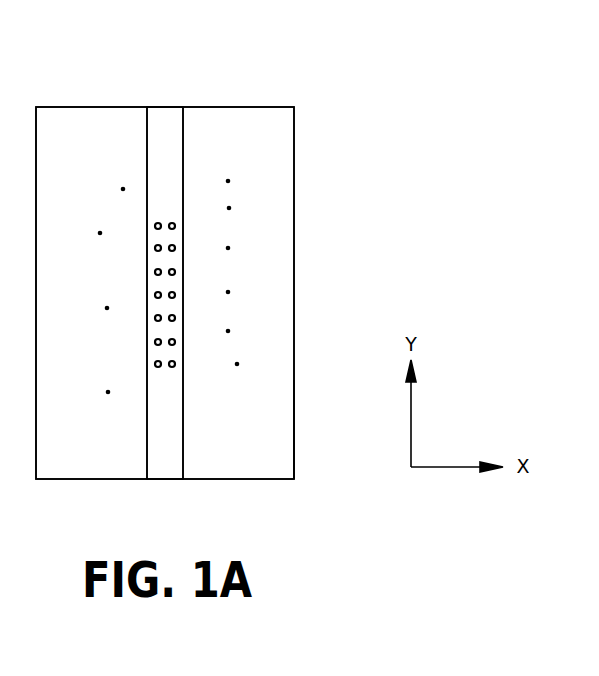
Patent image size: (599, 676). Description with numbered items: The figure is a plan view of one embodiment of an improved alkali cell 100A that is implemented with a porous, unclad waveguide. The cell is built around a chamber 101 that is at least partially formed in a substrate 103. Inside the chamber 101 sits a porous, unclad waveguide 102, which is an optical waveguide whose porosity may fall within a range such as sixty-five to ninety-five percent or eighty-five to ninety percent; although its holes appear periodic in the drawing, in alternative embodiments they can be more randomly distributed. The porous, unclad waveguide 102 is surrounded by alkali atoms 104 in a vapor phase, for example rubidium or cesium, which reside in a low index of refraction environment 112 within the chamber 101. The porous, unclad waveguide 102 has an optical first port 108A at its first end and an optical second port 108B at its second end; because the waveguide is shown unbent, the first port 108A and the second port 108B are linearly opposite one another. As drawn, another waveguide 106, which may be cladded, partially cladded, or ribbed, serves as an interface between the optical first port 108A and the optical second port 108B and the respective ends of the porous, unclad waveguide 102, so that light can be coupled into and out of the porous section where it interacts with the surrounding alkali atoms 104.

The improved alkali cell 100A is at (143, 25).
The chamber 101 is at (294, 263).
The porous, unclad waveguide 102 is at (188, 365).
The substrate 103 is at (294, 408).
The alkali atoms 104 is at (228, 181).
The other waveguide 106 is at (183, 168).
The optical first port 108A is at (162, 107).
The optical second port 108B is at (160, 479).
The low index of refraction environment 112 is at (107, 467).